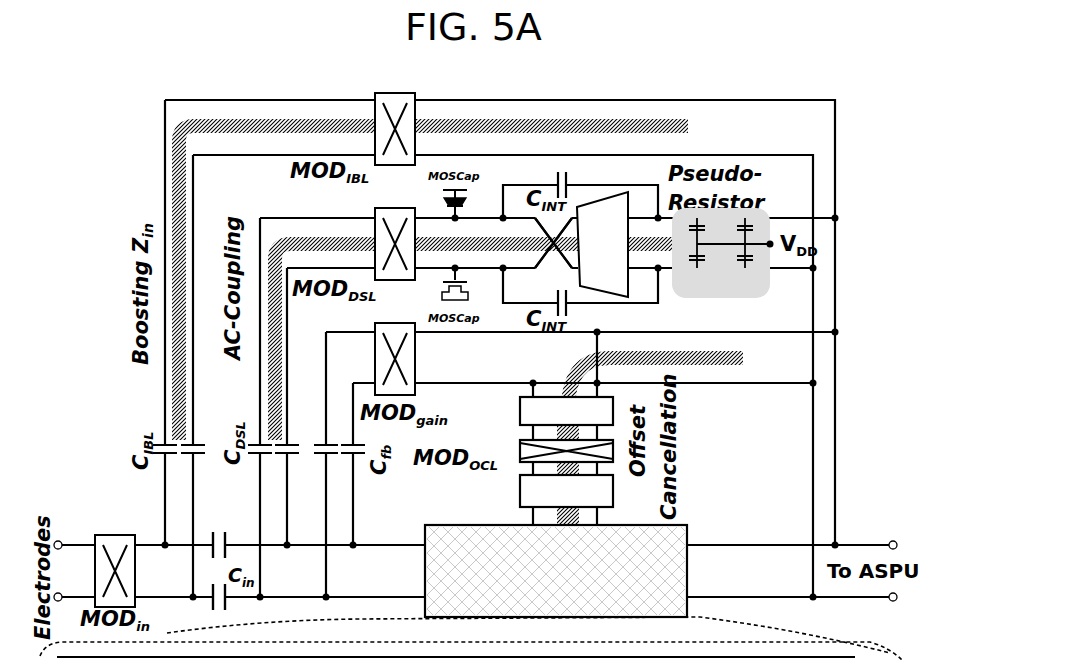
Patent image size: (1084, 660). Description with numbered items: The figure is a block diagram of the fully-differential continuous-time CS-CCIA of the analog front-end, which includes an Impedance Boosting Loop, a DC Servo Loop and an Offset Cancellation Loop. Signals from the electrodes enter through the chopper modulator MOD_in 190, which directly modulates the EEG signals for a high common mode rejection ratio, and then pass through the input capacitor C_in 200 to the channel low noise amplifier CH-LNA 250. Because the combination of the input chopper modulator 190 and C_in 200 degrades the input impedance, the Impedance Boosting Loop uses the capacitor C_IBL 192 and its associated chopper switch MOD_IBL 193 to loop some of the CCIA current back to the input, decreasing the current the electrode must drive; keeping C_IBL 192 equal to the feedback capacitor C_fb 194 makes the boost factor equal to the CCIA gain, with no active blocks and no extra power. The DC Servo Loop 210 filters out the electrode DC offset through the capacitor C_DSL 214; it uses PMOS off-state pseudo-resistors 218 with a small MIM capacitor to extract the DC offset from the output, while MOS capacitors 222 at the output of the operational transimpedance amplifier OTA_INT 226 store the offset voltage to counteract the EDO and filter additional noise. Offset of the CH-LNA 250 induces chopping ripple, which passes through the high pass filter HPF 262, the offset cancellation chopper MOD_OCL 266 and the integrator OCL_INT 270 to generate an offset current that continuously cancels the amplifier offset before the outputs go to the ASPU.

The chopper modulator MOD_in 190 is at (108, 535).
The capacitor C_IBL 192 is at (125, 450).
The chopper switch MOD_IBL 193 is at (380, 93).
The capacitor C_fb 194 is at (334, 478).
The capacitor C_in 200 is at (205, 540).
The DC Servo Loop 210 is at (482, 218).
The capacitor C_DSL 214 is at (222, 405).
The PMOS off-state pseudo-resistors 218 is at (768, 215).
The MOS capacitors 222 is at (447, 155).
The operational transimpedance amplifier OTA_INT 226 is at (618, 195).
The channel low noise amplifier CH-LNA 250 is at (462, 525).
The high pass filter HPF 262 is at (520, 400).
The offset cancellation chopper MOD_OCL 266 is at (520, 446).
The Offset Cancellation Loop integrator OCL_INT 270 is at (520, 490).